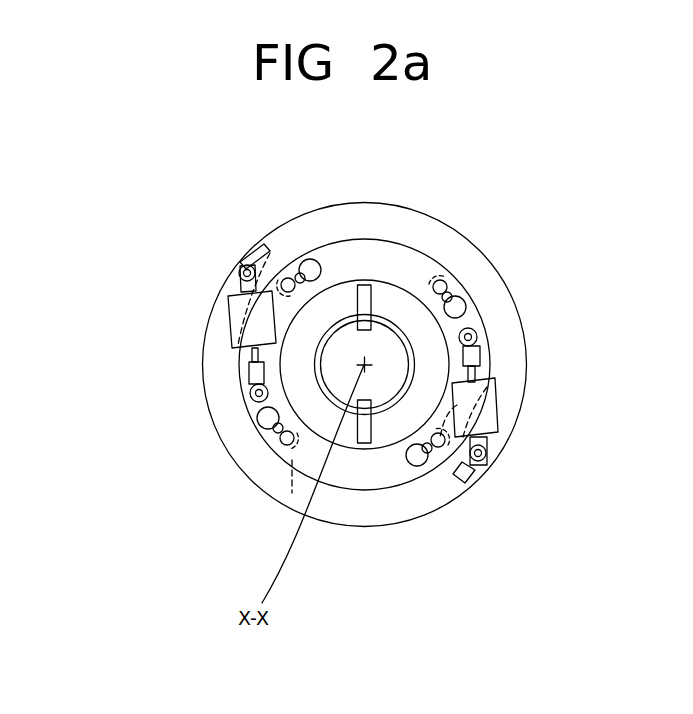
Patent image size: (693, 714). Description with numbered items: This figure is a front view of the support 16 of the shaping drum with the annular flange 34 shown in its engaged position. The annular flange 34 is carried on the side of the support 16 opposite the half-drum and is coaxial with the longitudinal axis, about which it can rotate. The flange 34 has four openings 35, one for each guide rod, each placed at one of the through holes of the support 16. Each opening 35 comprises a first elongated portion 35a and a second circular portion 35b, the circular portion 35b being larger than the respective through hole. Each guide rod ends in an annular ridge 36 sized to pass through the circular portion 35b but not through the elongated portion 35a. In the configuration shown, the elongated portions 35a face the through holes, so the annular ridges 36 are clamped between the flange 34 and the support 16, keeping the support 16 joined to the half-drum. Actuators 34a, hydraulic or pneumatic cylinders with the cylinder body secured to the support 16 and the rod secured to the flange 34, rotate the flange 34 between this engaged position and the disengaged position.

The support 16 is at (456, 504).
The annular flange 34 is at (410, 260).
The actuators 34a is at (222, 313).
The openings 35 is at (297, 258).
The first elongated portion 35a is at (297, 263).
The second circular portion 35b is at (310, 260).
The annular ridge 36 is at (238, 262).